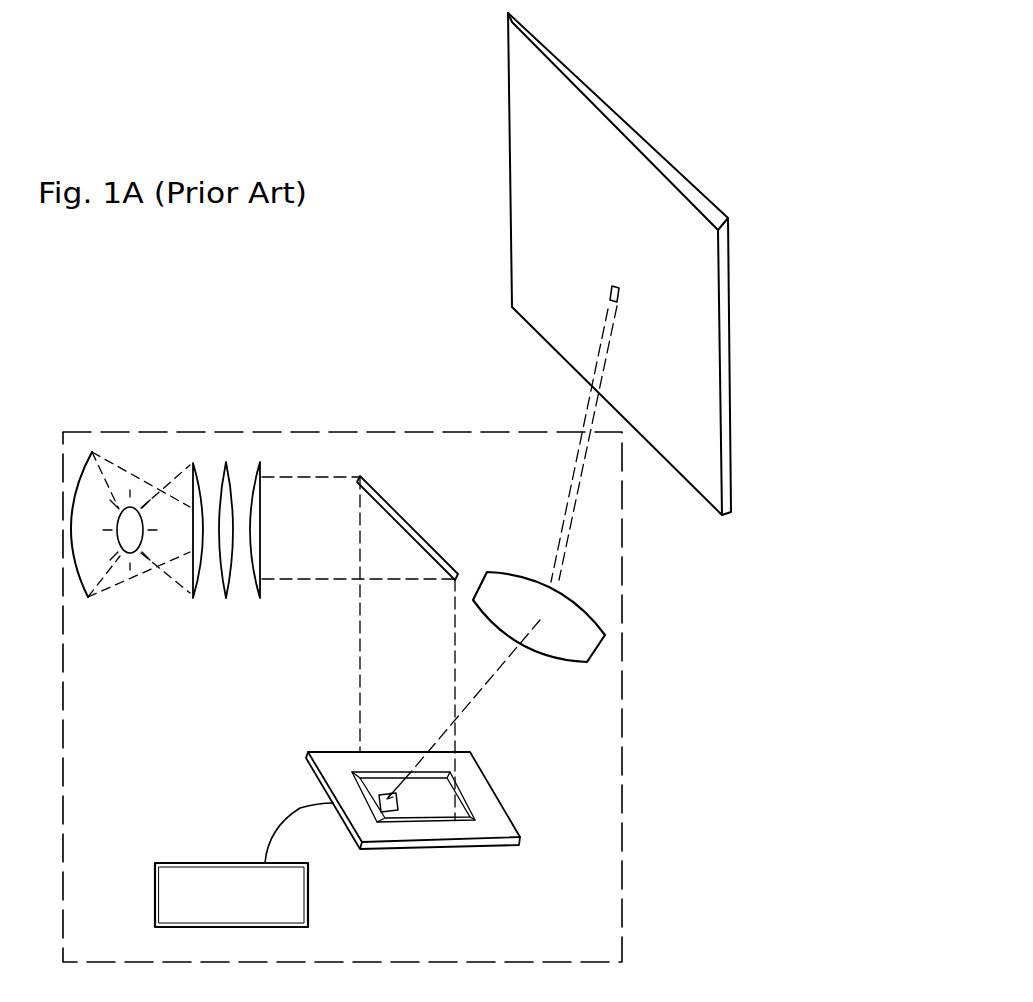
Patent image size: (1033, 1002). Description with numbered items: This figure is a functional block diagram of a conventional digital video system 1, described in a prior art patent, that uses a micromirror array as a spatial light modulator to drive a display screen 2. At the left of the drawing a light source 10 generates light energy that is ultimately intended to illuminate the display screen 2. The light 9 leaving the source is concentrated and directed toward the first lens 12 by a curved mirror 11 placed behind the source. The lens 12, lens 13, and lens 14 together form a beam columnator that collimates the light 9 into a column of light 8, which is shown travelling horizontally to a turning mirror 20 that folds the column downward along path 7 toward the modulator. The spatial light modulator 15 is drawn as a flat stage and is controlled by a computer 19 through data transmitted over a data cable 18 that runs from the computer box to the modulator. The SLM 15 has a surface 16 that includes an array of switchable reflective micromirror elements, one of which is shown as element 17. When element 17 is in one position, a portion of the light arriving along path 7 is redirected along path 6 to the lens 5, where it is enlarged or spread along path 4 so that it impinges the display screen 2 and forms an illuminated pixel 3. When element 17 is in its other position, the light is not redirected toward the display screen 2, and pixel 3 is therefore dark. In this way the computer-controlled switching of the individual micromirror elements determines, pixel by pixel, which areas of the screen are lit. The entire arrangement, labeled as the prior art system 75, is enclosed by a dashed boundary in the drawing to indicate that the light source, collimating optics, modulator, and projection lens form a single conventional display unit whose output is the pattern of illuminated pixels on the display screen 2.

The digital video system 1 is at (177, 755).
The display screen 2 is at (559, 204).
The illuminated pixel 3 is at (622, 279).
The path 4 is at (588, 428).
The lens 5 is at (558, 632).
The path 6 is at (495, 677).
The path 7 is at (386, 660).
The column of light 8 is at (318, 505).
The light 9 is at (160, 516).
The light source 10 is at (128, 545).
The mirror 11 is at (93, 450).
The lens 12 is at (195, 600).
The lens 13 is at (226, 600).
The lens 14 is at (255, 600).
The spatial light modulator 15 is at (343, 768).
The surface 16 is at (424, 803).
The element 17 is at (388, 813).
The data cable 18 is at (276, 823).
The computer 19 is at (210, 920).
The mirror 20 is at (413, 512).
The prior art system 75 is at (696, 702).